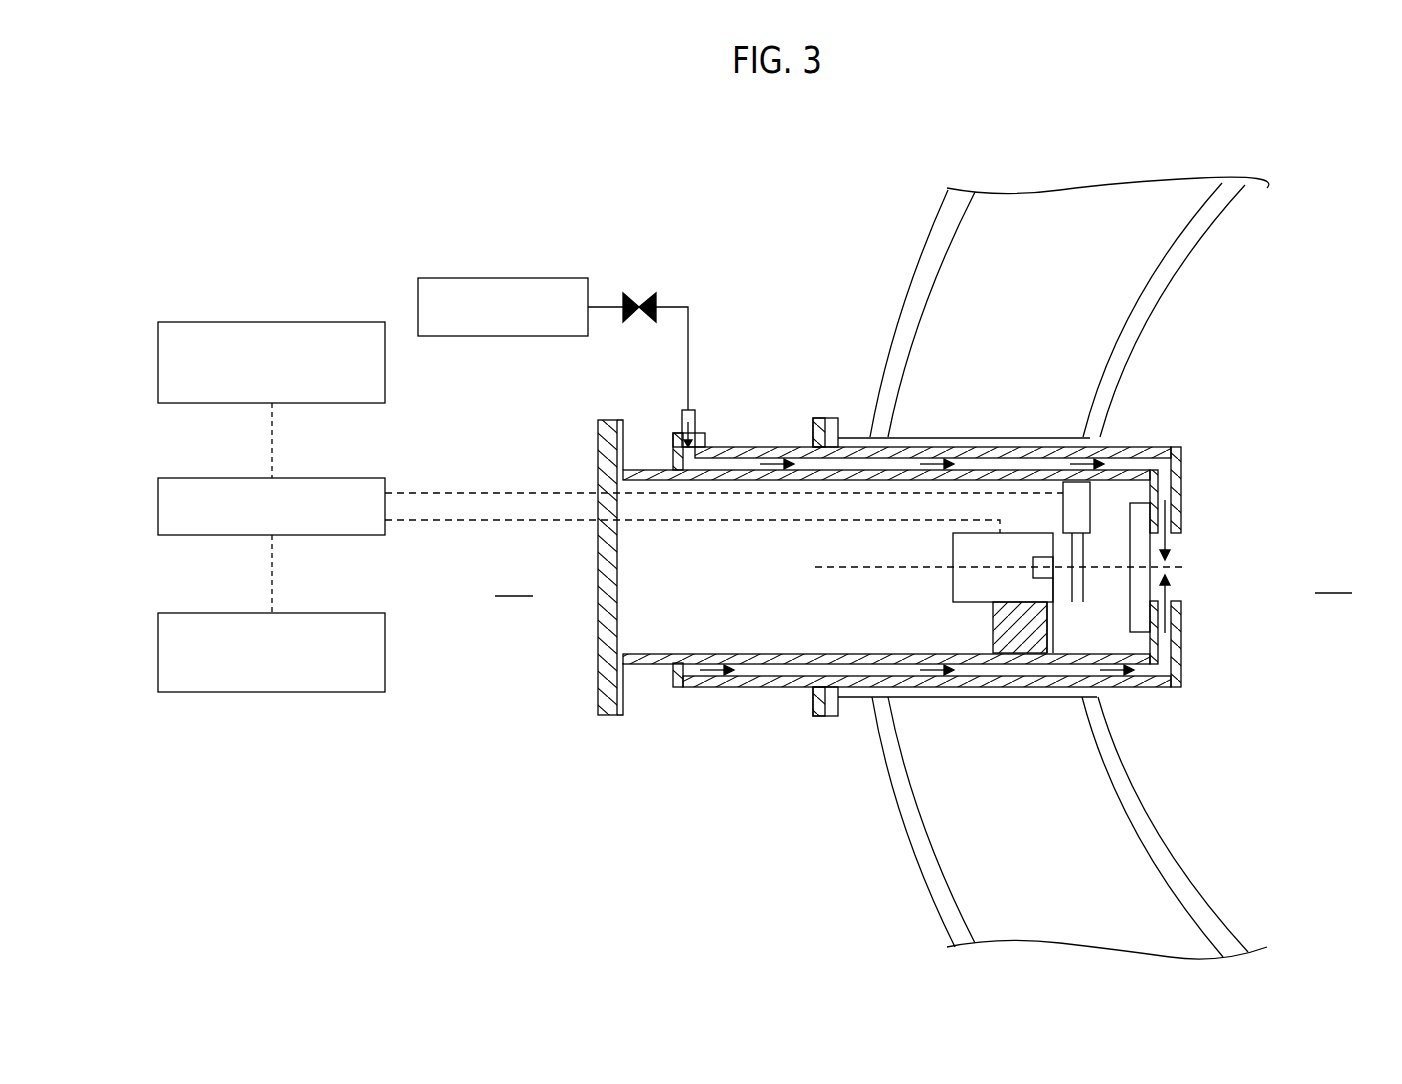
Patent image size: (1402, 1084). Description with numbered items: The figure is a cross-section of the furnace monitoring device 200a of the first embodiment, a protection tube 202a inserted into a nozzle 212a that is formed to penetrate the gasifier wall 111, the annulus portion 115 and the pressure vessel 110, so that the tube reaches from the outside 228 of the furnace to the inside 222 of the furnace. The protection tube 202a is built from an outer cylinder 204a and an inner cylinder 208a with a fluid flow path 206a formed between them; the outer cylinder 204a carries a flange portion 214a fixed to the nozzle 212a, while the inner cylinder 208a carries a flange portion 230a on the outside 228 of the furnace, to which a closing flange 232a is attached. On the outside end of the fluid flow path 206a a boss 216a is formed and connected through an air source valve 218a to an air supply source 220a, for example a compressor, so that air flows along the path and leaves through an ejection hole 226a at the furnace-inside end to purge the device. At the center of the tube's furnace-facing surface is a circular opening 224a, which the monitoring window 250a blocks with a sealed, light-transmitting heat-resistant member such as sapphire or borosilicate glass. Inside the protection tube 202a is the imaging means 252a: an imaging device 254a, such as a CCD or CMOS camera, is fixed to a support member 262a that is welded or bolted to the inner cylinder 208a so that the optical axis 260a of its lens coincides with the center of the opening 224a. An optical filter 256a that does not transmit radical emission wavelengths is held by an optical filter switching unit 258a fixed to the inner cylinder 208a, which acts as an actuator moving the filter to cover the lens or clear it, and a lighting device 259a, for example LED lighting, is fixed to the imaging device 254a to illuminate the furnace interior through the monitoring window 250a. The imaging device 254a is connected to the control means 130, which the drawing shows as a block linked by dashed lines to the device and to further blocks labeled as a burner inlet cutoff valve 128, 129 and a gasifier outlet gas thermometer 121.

The annulus portion 115 is at (1082, 205).
The pressure vessel 110 is at (940, 238).
The gasifier wall 111 is at (1158, 280).
The furnace monitoring device 200a is at (606, 878).
The protection tube 202a is at (947, 547).
The outer cylinder 204a is at (1184, 452).
The fluid flow path 206a is at (1165, 473).
The inner cylinder 208a is at (905, 575).
The nozzle 212a is at (857, 437).
The flange portion 214a is at (820, 418).
The boss 216a is at (690, 410).
The air source valve 218a is at (642, 292).
The air supply source 220a is at (515, 278).
The inside of the furnace 222 is at (1335, 579).
The opening 224a is at (1208, 532).
The ejection hole 226a is at (1172, 537).
The outside of the furnace 228 is at (515, 582).
The flange portion 230a is at (620, 420).
The closing flange 232a is at (598, 662).
The monitoring window 250a is at (1148, 628).
The imaging means 252a is at (928, 683).
The imaging device 254a is at (950, 604).
The optical filter 256a is at (1043, 578).
The optical filter switching unit 258a is at (1082, 502).
The lighting device 259a is at (1045, 605).
The optical axis 260a is at (815, 568).
The support member 262a is at (993, 637).
The burner inlet cutoff valve 128 is at (275, 348).
The burner inlet cutoff valve 129 is at (297, 322).
The control means 130 is at (328, 478).
The gasifier outlet gas thermometer 121 is at (328, 613).